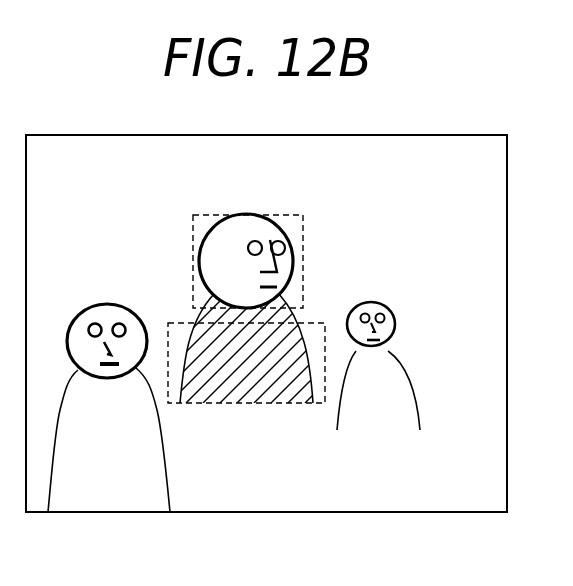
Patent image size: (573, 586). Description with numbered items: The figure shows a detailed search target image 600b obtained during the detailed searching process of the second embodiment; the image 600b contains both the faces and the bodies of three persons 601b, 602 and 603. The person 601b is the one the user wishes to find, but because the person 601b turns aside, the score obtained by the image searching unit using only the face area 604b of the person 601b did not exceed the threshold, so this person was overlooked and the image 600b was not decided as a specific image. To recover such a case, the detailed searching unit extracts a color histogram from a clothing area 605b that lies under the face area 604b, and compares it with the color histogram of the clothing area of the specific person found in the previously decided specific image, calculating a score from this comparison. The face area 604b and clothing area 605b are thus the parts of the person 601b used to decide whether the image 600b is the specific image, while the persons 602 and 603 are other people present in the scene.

The detailed search target image 600b is at (467, 135).
The person 601b is at (210, 225).
The person 602 is at (108, 303).
The person 603 is at (373, 301).
The face area 604b is at (292, 215).
The clothing area 605b is at (245, 404).